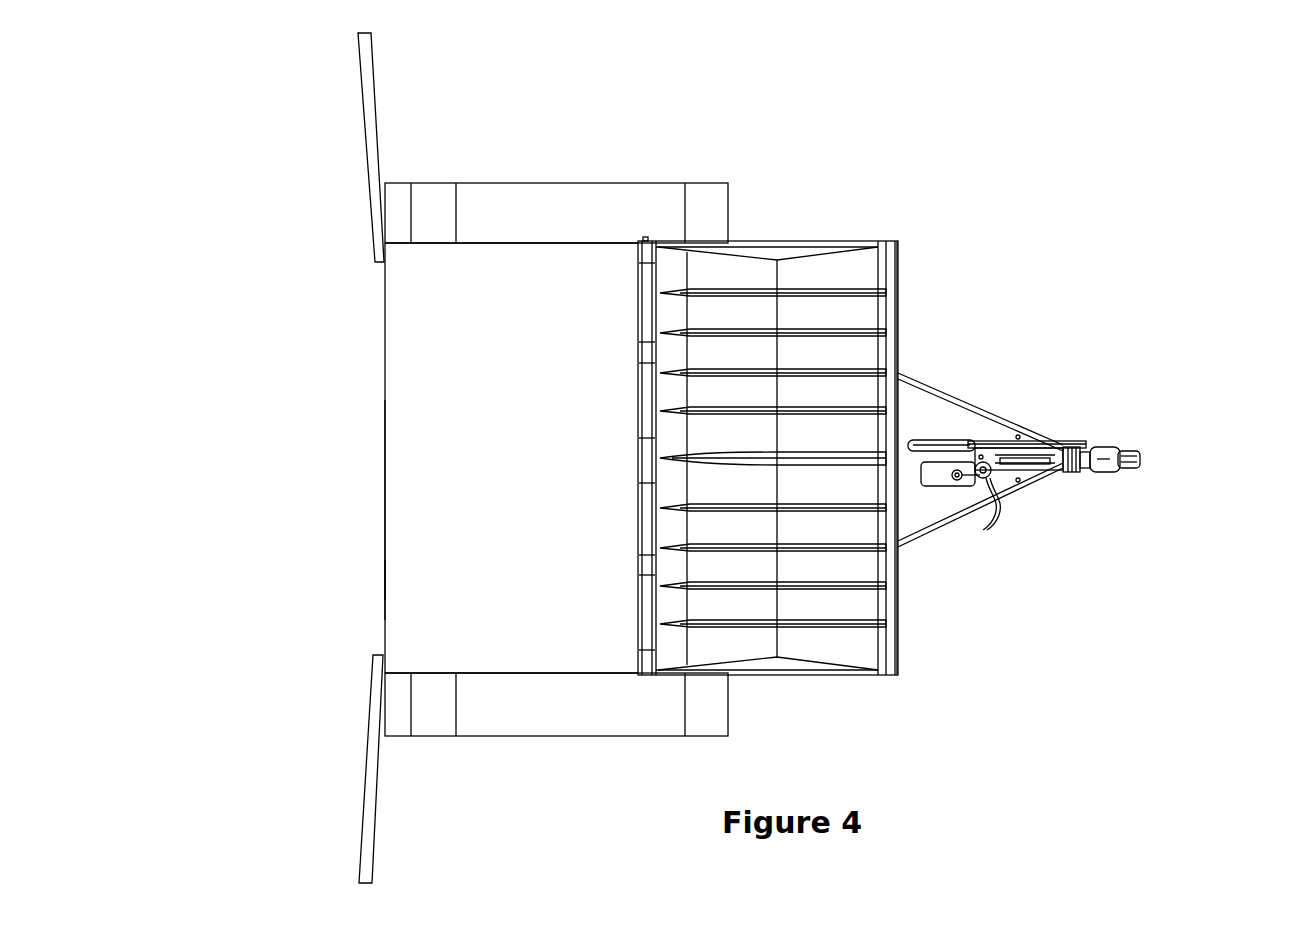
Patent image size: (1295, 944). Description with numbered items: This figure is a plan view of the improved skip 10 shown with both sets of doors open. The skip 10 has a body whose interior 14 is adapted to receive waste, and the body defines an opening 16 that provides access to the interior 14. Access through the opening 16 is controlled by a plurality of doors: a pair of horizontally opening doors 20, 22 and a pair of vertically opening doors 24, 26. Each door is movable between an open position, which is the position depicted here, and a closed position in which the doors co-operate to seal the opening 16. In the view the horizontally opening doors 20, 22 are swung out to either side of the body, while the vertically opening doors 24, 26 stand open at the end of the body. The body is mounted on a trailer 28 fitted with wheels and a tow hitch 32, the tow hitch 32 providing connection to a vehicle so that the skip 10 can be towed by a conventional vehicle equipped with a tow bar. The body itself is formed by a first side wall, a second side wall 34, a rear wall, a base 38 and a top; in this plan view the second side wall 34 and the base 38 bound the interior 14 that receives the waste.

The skip 10 is at (300, 331).
The interior 14 is at (536, 493).
The opening 16 is at (384, 585).
The horizontally opening door 20 is at (373, 157).
The horizontally opening door 22 is at (377, 778).
The vertically opening door 24 is at (893, 620).
The vertically opening door 26 is at (892, 312).
The trailer 28 is at (962, 520).
The tow hitch 32 is at (571, 675).
The second side wall 34 is at (573, 243).
The base 38 is at (397, 516).